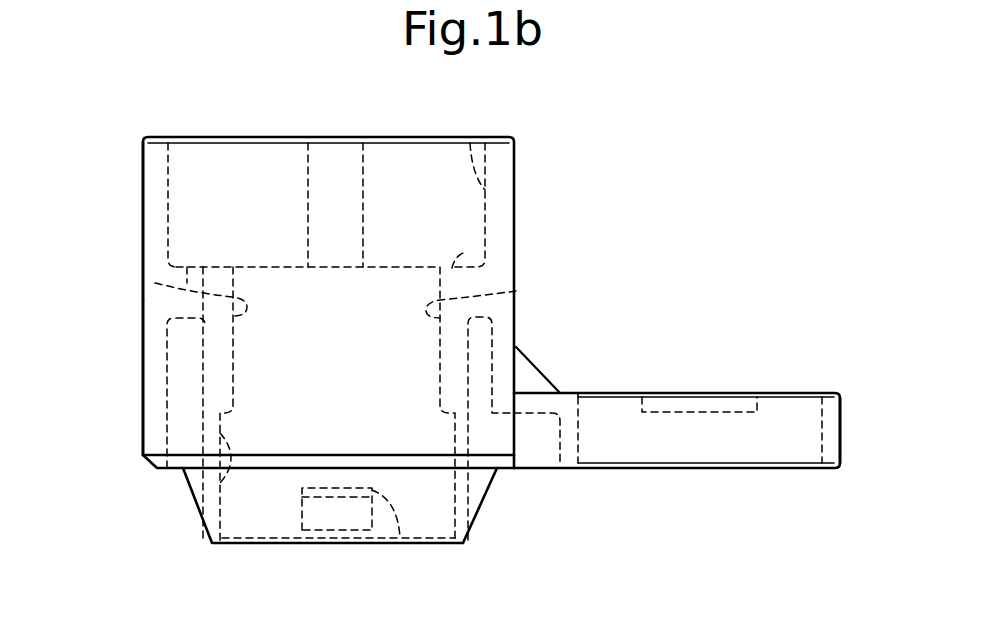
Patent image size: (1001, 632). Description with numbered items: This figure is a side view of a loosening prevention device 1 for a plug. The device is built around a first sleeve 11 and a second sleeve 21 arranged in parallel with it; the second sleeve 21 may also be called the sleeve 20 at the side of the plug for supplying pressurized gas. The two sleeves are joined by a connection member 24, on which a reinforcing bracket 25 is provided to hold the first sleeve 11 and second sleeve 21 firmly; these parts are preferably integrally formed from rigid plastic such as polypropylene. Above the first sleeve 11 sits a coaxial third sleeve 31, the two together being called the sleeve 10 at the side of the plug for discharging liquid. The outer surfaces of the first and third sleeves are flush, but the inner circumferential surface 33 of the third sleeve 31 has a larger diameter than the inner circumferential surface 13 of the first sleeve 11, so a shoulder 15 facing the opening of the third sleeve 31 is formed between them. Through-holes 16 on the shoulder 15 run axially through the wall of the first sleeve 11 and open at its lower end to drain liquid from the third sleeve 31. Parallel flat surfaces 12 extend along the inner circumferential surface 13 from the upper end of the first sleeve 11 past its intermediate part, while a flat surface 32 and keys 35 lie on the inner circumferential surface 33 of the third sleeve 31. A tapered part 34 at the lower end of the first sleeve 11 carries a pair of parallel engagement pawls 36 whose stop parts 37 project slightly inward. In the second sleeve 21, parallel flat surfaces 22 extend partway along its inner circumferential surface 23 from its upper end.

The loosening prevention device 1 is at (645, 190).
The sleeve at the side of the plug for discharging liquid 10 is at (130, 322).
The first sleeve 11 is at (158, 392).
The flat surfaces 12 is at (155, 283).
The inner circumferential surface 13 is at (212, 488).
The shoulder 15 is at (458, 267).
The through-holes 16 is at (185, 410).
The sleeve at the side of the plug for supplying pressurized-gas 20 is at (857, 391).
The second sleeve 21 is at (827, 431).
The flat surfaces 22 is at (727, 403).
The inner circumferential surface 23 is at (820, 440).
The connection member 24 is at (541, 455).
The reinforcing bracket 25 is at (533, 380).
The third sleeve 31 is at (156, 198).
The flat surface 32 is at (477, 143).
The inner circumferential surface 33 is at (172, 178).
The tapered part 34 is at (487, 497).
The keys 35 is at (348, 178).
The engagement pawls 36 is at (400, 540).
The stop parts 37 is at (355, 512).